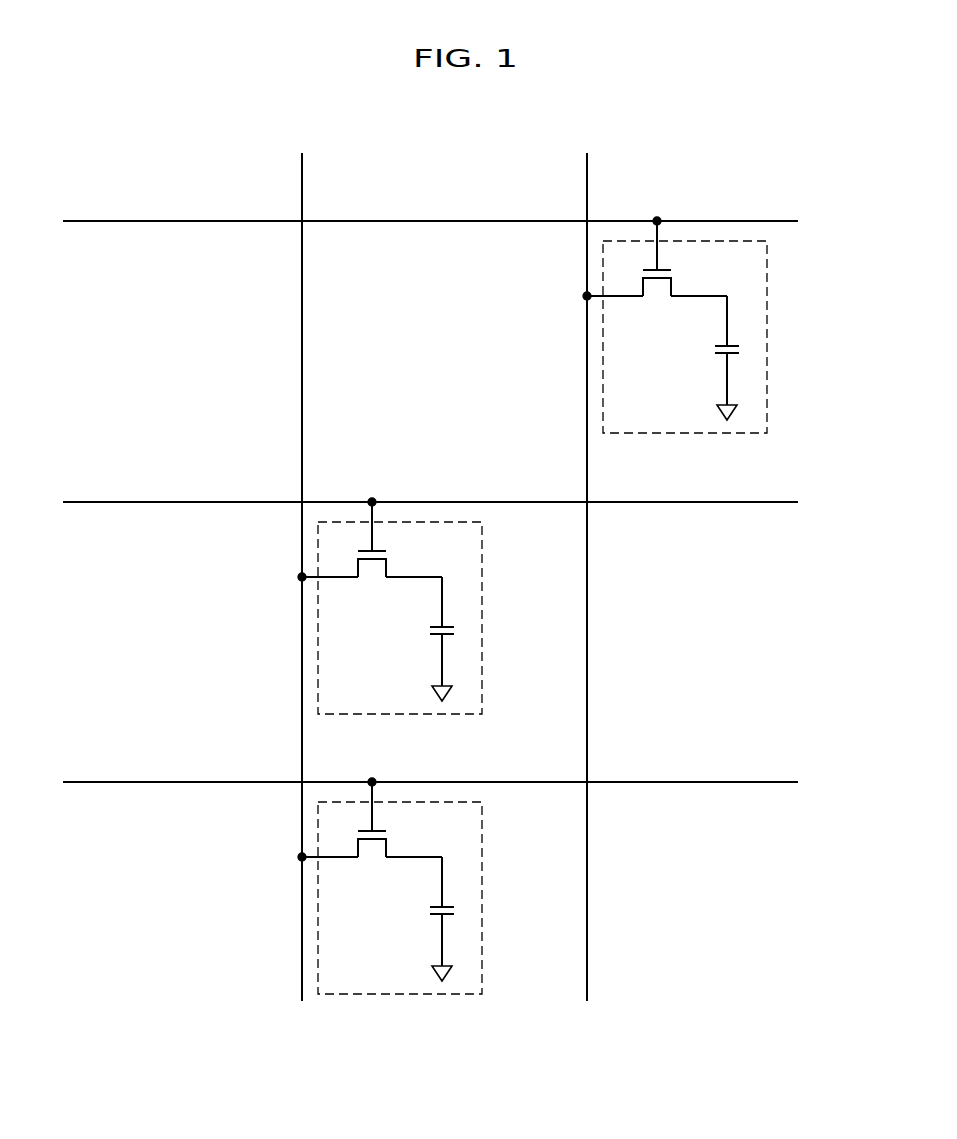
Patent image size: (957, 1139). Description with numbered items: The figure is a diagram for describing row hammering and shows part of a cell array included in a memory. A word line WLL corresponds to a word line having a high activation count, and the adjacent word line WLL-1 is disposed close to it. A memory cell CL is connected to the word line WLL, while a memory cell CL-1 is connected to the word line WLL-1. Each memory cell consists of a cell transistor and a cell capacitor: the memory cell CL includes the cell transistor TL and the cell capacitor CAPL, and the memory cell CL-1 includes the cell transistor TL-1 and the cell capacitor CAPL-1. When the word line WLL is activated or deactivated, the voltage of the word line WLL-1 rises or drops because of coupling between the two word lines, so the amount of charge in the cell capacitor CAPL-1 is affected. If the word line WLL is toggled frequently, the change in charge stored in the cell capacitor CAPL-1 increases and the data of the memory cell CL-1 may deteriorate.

The word line WLL-1 is at (457, 222).
The word line WLL is at (450, 503).
The memory cell CL-1 is at (767, 292).
The memory cell CL is at (482, 573).
The cell transistor TL-1 is at (657, 298).
The cell transistor TL is at (372, 579).
The cell capacitor CAPL-1 is at (696, 358).
The cell capacitor CAPL is at (419, 639).